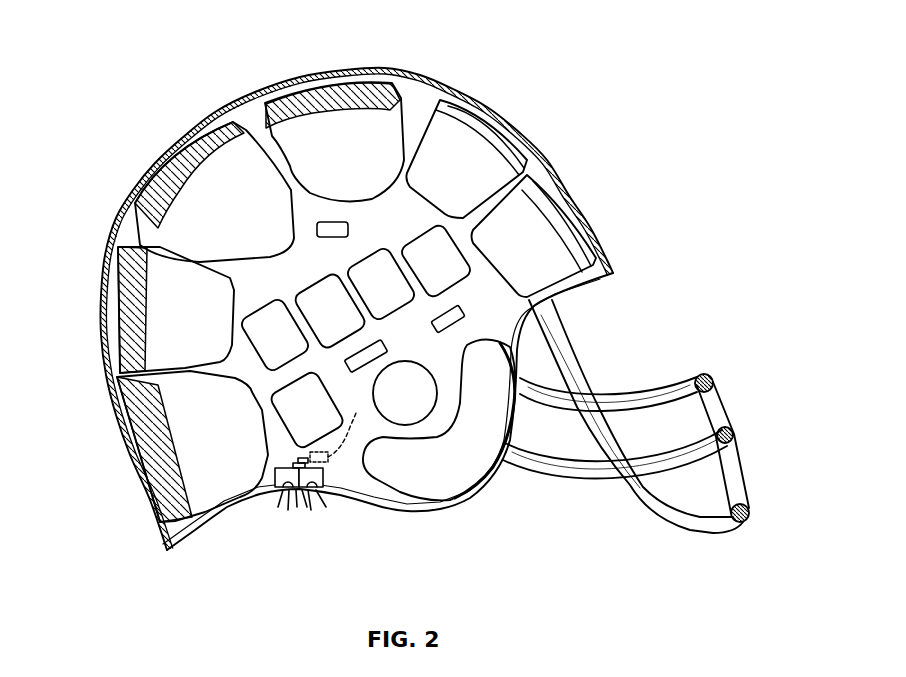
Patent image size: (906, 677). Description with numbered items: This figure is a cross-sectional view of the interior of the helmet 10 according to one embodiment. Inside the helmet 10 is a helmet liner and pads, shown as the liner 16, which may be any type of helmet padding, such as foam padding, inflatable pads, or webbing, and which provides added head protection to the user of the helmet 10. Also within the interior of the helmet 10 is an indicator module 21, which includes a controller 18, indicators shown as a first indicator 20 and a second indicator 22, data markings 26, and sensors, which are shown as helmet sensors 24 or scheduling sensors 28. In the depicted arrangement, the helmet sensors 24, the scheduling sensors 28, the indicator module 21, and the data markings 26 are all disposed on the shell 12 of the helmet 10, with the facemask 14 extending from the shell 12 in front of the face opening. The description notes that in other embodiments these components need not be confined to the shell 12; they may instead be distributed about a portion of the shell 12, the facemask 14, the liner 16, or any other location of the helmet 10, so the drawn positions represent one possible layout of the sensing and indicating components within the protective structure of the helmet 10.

The helmet 10 is at (672, 30).
The shell 12 is at (547, 157).
The facemask 14 is at (653, 393).
The liner 16 is at (270, 317).
The controller 18 is at (342, 427).
The first indicator 20 is at (277, 490).
The indicator module 21 is at (283, 455).
The second indicator 22 is at (323, 488).
The helmet sensors 24 is at (160, 163).
The data markings 26 is at (348, 232).
The scheduling sensors 28 is at (318, 73).